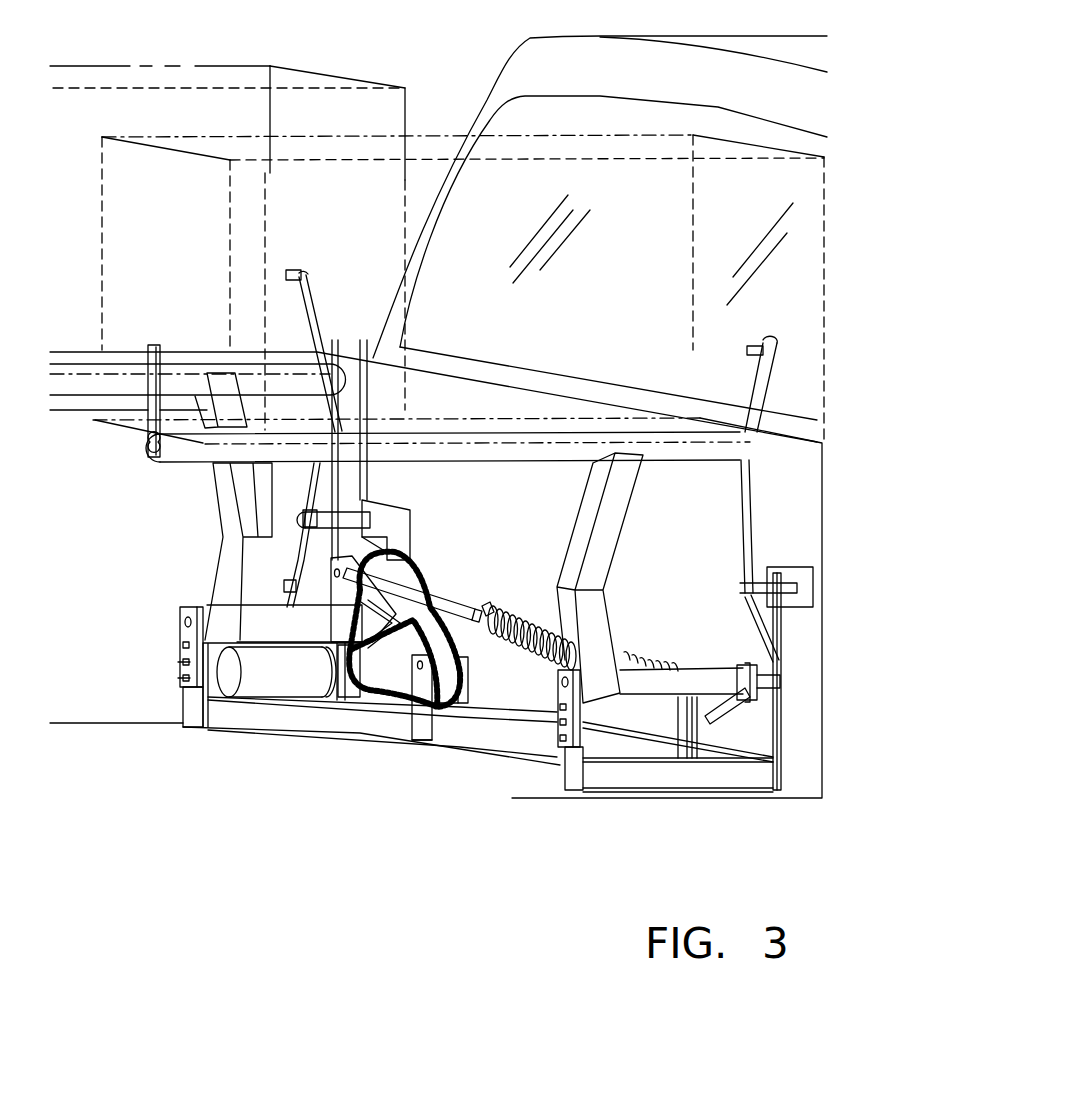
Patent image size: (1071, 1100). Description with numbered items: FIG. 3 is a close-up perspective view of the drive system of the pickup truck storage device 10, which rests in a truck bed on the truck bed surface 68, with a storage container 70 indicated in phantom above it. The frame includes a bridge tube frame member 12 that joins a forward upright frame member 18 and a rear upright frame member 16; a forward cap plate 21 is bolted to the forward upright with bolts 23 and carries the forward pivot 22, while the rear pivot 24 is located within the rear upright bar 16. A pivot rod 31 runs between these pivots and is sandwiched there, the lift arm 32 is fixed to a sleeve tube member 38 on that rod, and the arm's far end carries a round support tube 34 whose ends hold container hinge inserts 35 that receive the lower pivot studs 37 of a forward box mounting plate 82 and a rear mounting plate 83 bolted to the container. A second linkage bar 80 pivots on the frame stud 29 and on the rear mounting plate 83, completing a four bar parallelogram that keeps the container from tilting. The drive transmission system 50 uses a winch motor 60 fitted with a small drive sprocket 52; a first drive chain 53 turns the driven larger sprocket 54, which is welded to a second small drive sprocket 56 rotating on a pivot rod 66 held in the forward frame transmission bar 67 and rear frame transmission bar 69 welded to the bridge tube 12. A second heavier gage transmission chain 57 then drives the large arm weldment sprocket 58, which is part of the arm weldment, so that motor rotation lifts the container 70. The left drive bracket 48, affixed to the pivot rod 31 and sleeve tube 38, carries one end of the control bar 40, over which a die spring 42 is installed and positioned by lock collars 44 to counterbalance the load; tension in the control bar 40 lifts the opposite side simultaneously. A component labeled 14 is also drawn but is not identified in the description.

The pickup truck storage device 10 is at (145, 45).
The bridge tube frame member 12 is at (520, 753).
The front post 14 is at (220, 730).
The rear upright frame member 16 is at (378, 500).
The forward upright frame member 18 is at (187, 730).
The forward cap plate 21 is at (180, 730).
The forward pivot 22 is at (180, 645).
The bolts 23 is at (180, 678).
The rear pivot 24 is at (793, 680).
The pivot anchor stud 29 is at (300, 514).
The pivot rod 31 is at (183, 623).
The lift arms 32 is at (213, 585).
The support tube 34 is at (200, 364).
The container hinge insert 35 is at (152, 452).
The pivot stud 37 is at (147, 450).
The sleeve tube member 38 is at (270, 627).
The control bar 40 is at (475, 607).
The die spring 42 is at (485, 612).
The lock collars 44 is at (630, 655).
The left drive bracket 48 is at (340, 690).
The drive transmission system 50 is at (320, 827).
The drive sprocket 52 is at (343, 685).
The first drive chain 53 is at (358, 698).
The driven larger sprocket 54 is at (457, 680).
The second small drive sprocket 56 is at (455, 603).
The second transmission chain 57 is at (413, 565).
The large arm weldment sprocket 58 is at (418, 570).
The motor 60 is at (260, 683).
The pivot rod 66 is at (420, 675).
The forward frame transmission bar 67 is at (420, 750).
The truck bed surface 68 is at (648, 775).
The rear frame transmission bar 69 is at (470, 705).
The storage containers 70 is at (310, 70).
The second linkage bar 80 is at (308, 310).
The forward box mounting plate 82 is at (135, 352).
The rear mounting plate 83 is at (312, 278).